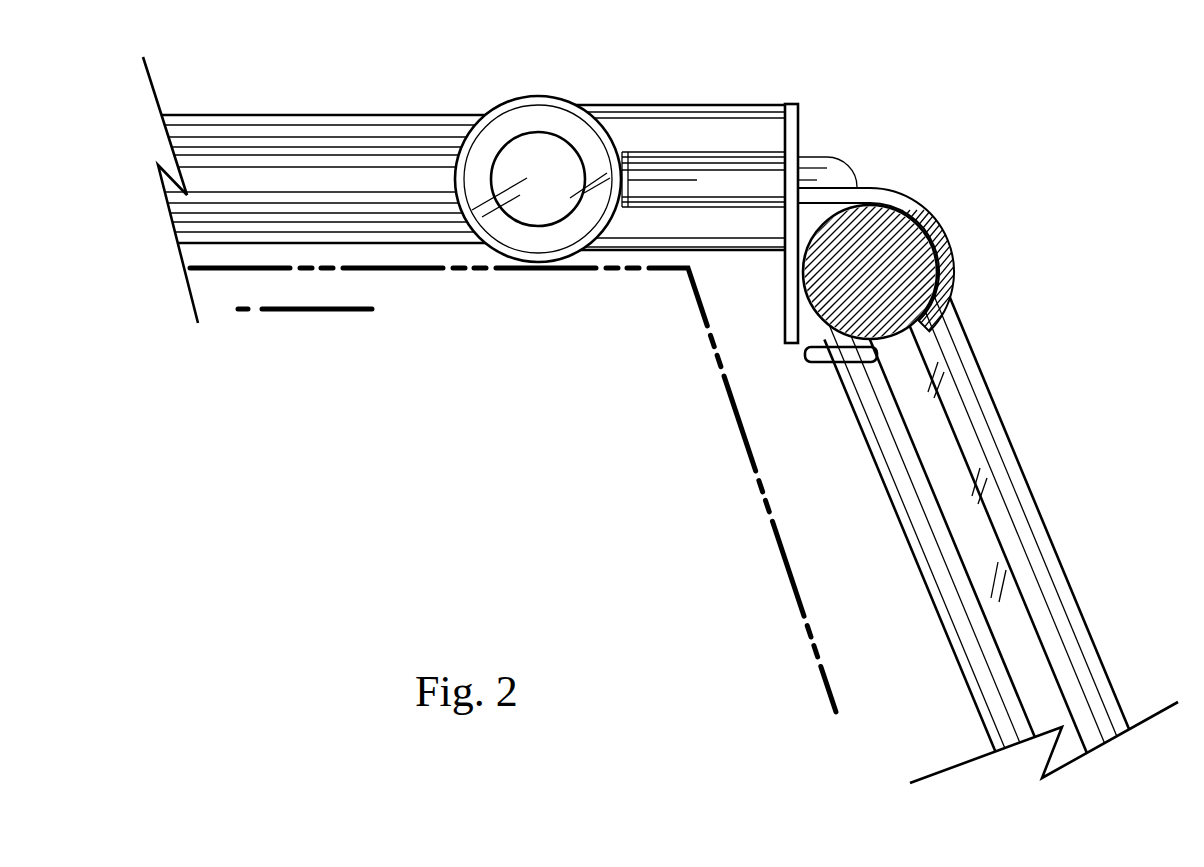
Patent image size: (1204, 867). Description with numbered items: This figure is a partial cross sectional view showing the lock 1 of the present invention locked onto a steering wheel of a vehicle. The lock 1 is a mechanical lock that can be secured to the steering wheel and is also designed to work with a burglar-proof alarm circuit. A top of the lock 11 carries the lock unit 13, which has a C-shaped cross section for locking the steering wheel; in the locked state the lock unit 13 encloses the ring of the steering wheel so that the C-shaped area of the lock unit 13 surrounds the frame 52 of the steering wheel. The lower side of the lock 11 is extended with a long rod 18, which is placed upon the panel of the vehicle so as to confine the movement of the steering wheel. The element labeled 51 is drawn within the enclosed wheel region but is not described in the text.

The lock 1 is at (858, 82).
The lock 11 is at (540, 92).
The lock unit 13 is at (890, 197).
The long rod 18 is at (348, 122).
The ball 51 is at (907, 243).
The frame 52 is at (918, 415).